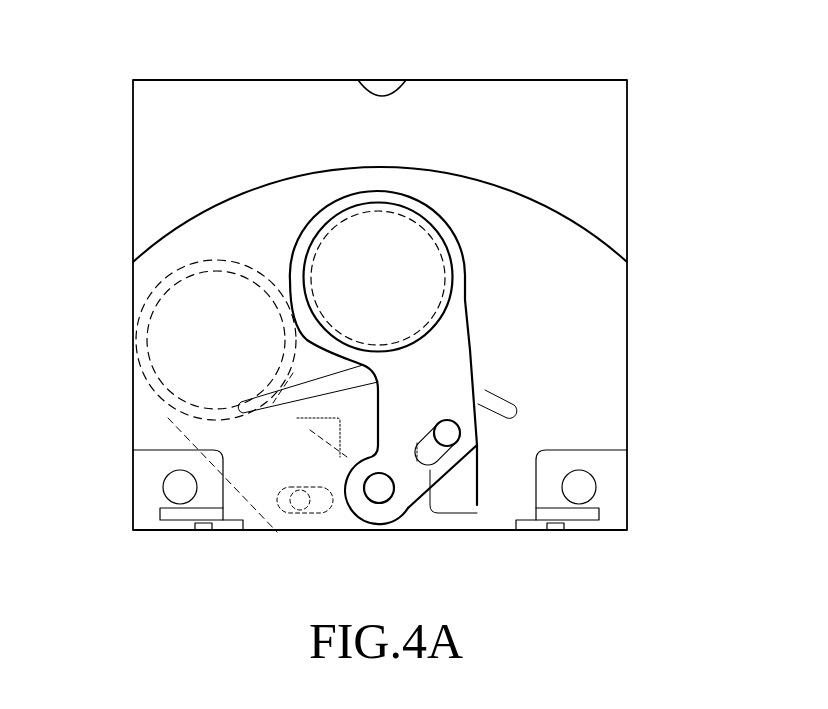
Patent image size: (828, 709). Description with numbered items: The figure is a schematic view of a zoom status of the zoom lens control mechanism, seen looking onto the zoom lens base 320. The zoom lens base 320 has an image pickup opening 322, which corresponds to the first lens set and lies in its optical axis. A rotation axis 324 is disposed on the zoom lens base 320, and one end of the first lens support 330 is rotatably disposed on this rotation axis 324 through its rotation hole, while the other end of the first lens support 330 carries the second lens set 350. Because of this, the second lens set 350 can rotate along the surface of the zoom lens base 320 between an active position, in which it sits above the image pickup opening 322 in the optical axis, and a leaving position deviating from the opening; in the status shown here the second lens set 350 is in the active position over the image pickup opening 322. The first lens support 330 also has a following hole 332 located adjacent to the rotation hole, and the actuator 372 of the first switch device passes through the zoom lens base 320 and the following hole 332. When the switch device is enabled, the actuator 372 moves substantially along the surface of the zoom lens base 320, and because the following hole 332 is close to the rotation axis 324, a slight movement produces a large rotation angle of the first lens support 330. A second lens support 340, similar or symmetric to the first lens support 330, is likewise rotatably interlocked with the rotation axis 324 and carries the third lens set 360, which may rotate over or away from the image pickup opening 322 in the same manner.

The zoom lens base 320 is at (607, 152).
The image pickup opening 322 is at (397, 213).
The rotation axis 324 is at (373, 493).
The first lens support 330 is at (437, 362).
The following hole 332 is at (430, 452).
The second lens support 340 is at (213, 441).
The second lens set 350 is at (448, 274).
The third lens set 360 is at (187, 346).
The actuator 372 is at (480, 437).